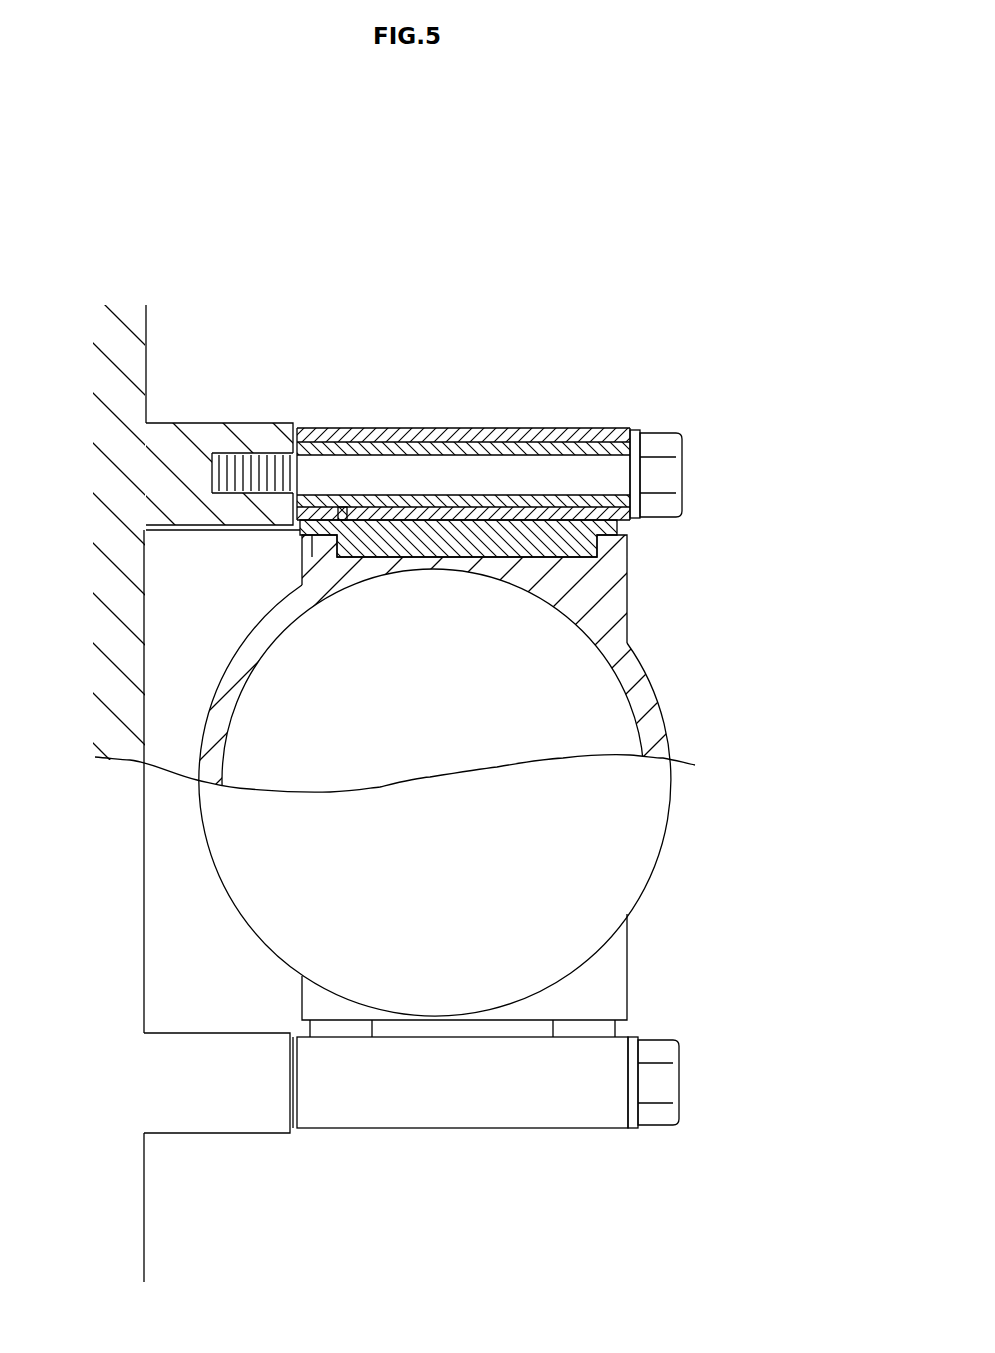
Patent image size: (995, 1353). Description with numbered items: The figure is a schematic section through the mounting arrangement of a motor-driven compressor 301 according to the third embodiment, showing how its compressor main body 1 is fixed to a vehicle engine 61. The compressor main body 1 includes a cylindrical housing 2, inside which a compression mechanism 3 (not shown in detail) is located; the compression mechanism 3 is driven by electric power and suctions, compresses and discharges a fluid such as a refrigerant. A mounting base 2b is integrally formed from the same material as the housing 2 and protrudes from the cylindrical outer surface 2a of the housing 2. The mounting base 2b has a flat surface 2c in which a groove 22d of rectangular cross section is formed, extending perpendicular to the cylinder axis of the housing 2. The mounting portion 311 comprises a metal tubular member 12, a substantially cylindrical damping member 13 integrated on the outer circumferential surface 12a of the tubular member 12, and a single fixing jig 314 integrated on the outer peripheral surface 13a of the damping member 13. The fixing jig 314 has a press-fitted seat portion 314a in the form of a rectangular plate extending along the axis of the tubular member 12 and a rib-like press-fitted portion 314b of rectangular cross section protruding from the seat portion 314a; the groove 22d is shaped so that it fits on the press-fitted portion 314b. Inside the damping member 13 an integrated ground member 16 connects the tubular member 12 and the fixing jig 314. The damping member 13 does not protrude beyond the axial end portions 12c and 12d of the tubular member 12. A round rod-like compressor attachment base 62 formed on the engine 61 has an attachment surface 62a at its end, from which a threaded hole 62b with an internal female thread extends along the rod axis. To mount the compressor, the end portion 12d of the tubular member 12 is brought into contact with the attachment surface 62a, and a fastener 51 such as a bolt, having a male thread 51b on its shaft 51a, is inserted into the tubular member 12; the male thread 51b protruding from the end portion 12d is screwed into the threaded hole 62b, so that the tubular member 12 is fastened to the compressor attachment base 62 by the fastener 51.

The compressor main body 1 is at (659, 857).
The housing 2 is at (657, 697).
The cylindrical outer surface 2a is at (668, 738).
The mounting base 2b is at (613, 617).
The flat surface 2c is at (630, 536).
The groove 22d is at (593, 558).
The compression mechanism 3 is at (290, 878).
The tubular member 12 is at (511, 442).
The outer circumferential surface 12a is at (551, 442).
The end portion 12c is at (634, 448).
The end portion 12d is at (293, 452).
The damping member 13 is at (417, 428).
The outer peripheral surface 13a is at (462, 428).
The ground member 16 is at (350, 507).
The fastener 51 is at (683, 475).
The shaft 51a is at (612, 478).
The male thread 51b is at (232, 451).
The engine 61 is at (147, 326).
The compressor attachment base 62 is at (176, 423).
The attachment surface 62a is at (297, 530).
The threaded hole 62b is at (212, 478).
The motor-driven compressor 301 is at (683, 276).
The mounting portion 311 is at (643, 358).
The fixing jig 314 is at (625, 520).
The press-fitted seat portion 314a is at (298, 535).
The press-fitted portion 314b is at (330, 560).